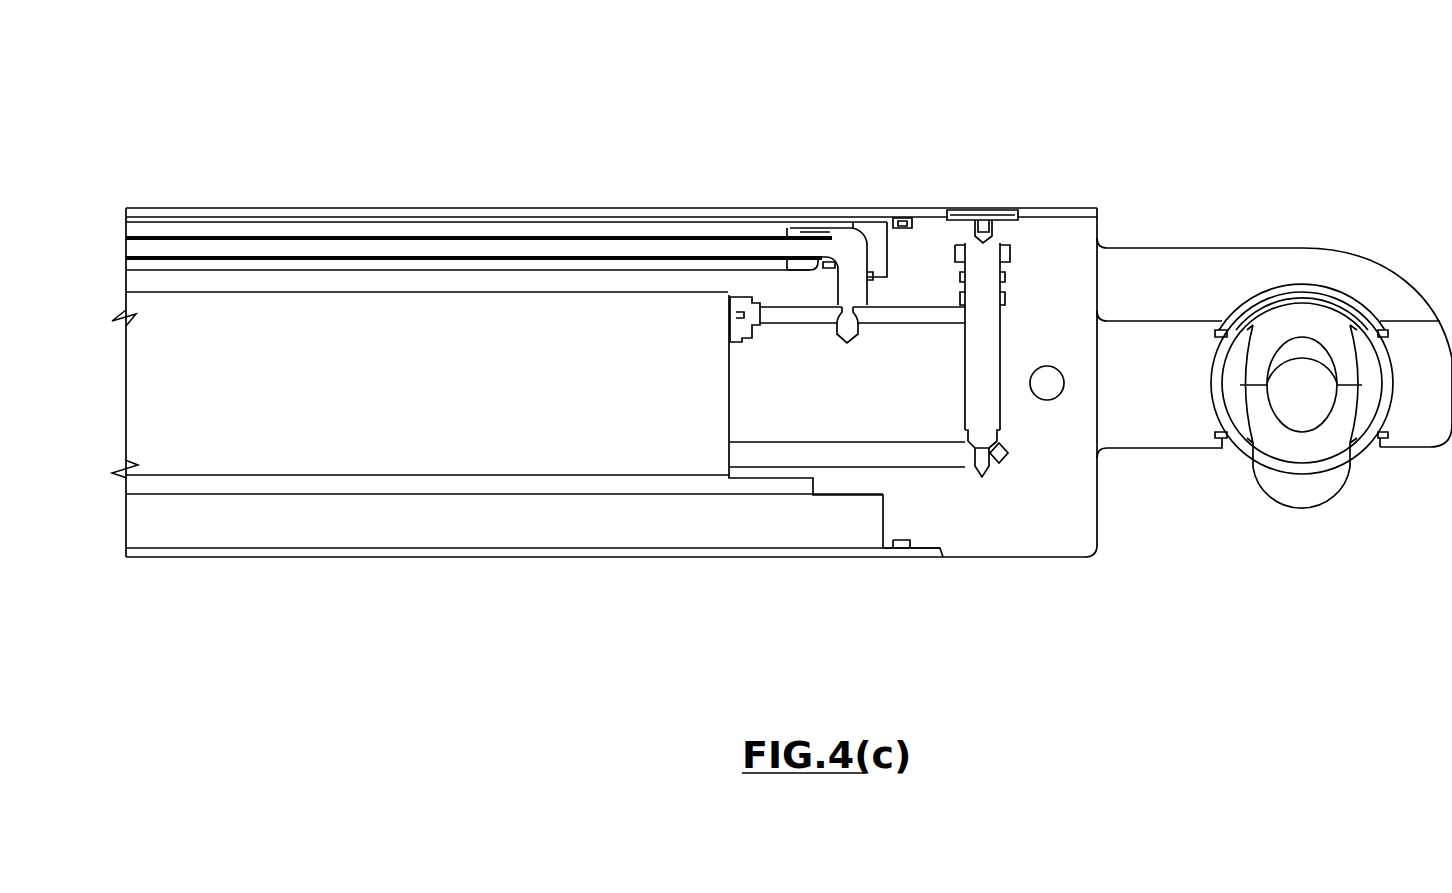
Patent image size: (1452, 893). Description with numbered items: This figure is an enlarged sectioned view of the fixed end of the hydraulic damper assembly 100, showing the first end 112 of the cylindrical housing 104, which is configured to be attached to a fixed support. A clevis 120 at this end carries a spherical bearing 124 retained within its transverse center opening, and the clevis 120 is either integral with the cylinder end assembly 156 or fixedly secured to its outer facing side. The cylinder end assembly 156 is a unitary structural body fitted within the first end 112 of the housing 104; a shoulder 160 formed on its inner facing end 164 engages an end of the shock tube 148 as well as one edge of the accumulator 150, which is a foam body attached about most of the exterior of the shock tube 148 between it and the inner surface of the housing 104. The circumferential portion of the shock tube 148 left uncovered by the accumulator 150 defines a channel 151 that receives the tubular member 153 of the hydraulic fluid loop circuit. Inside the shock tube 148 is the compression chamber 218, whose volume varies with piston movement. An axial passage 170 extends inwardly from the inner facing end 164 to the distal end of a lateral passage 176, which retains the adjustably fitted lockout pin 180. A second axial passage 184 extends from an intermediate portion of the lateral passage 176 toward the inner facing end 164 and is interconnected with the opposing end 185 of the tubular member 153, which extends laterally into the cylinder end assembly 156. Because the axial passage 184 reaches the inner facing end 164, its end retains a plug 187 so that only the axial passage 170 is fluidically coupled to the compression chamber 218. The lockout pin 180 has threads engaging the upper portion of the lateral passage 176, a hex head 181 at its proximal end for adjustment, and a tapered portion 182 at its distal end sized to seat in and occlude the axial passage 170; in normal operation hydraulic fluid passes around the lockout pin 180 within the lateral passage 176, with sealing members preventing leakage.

The hydraulic damper assembly 100 is at (580, 44).
The cylindrical housing 104 is at (640, 206).
The first end 112 is at (940, 553).
The clevis 120 is at (1268, 258).
The spherical bearing 124 is at (1240, 423).
The shock tube 148 is at (303, 280).
The accumulator 150 is at (490, 543).
The channel 151 is at (446, 226).
The tubular member 153 is at (389, 250).
The cylinder end assembly 156 is at (1085, 541).
The shoulder 160 is at (835, 535).
The inner facing end 164 is at (768, 300).
The axial passage 170 is at (908, 467).
The lateral passage 176 is at (1002, 338).
The adjustable lockout pin 180 is at (999, 239).
The hex head 181 is at (975, 213).
The tapered portion 182 is at (1002, 427).
The axial passage 184 is at (921, 313).
The opposing end 185 is at (840, 249).
The plug 187 is at (742, 295).
The compression chamber 218 is at (542, 309).